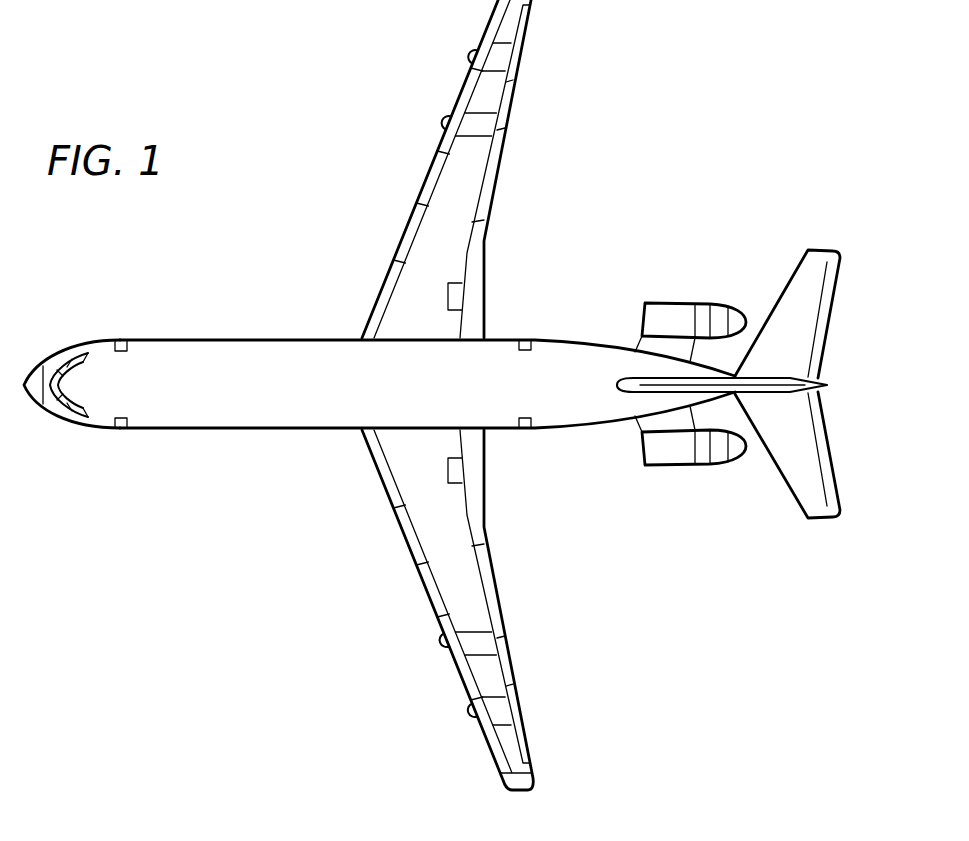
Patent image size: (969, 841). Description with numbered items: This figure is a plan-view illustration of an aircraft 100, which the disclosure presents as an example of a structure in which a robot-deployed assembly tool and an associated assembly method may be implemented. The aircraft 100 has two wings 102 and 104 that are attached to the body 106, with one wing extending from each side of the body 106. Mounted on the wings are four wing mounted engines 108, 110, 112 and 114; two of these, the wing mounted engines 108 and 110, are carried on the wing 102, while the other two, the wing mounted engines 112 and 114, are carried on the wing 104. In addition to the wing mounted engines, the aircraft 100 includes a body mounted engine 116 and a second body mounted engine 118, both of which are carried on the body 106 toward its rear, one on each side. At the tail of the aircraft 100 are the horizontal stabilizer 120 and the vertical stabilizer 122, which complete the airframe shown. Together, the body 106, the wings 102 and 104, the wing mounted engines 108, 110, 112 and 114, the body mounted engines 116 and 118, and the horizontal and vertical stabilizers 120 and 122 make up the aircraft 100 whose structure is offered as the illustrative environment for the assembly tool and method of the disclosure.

The aircraft 100 is at (312, 128).
The wing 102 is at (426, 176).
The wing 104 is at (426, 594).
The body 106 is at (238, 338).
The wing mounted engine 108 is at (468, 52).
The wing mounted engine 110 is at (441, 118).
The wing mounted engine 112 is at (443, 642).
The wing mounted engine 114 is at (470, 712).
The body mounted engine 116 is at (683, 303).
The body mounted engine 118 is at (683, 465).
The horizontal stabilizer 120 is at (835, 290).
The vertical stabilizer 122 is at (799, 362).